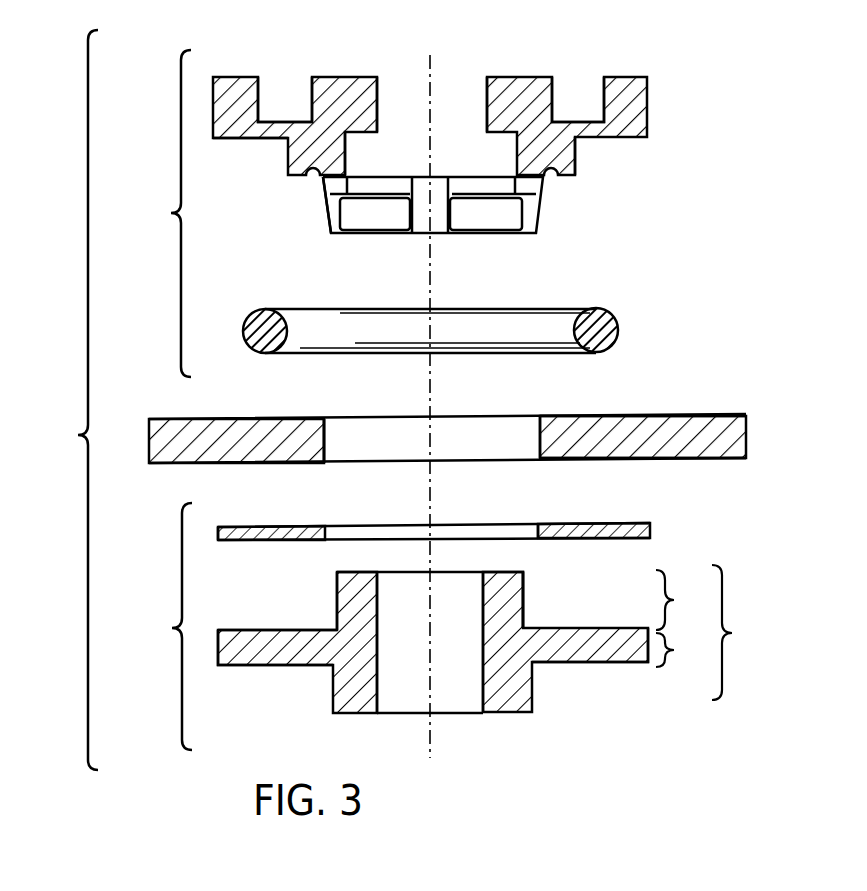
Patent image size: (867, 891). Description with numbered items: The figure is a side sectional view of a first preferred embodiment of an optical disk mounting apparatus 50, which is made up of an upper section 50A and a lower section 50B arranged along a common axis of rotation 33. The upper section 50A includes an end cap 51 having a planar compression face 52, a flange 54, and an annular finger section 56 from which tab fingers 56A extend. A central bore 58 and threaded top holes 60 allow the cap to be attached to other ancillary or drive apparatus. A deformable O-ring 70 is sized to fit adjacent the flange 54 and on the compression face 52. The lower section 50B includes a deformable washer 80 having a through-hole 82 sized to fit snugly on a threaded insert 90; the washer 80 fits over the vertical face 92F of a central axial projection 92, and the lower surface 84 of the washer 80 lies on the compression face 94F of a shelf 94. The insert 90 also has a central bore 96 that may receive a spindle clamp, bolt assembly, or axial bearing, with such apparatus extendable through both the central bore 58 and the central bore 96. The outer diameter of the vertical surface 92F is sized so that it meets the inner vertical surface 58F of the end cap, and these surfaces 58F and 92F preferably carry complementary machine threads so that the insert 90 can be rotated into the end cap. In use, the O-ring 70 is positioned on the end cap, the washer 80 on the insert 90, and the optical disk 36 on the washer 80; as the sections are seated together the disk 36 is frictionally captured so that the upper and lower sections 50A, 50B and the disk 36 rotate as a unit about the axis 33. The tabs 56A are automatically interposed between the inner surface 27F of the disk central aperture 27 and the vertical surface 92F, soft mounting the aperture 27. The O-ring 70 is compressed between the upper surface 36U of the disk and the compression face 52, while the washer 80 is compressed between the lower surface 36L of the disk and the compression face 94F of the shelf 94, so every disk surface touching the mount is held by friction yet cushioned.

The axis of rotation 33 is at (428, 735).
The optical disk mounting apparatus 50 is at (63, 400).
The upper section 50A is at (152, 213).
The lower section 50B is at (152, 626).
The end cap 51 is at (648, 100).
The planar compression face 52 is at (640, 138).
The flange 54 is at (577, 160).
The annular finger section 56 is at (543, 193).
The tab fingers 56A is at (322, 220).
The central bore 58 is at (450, 92).
The inner vertical surface 58F is at (350, 172).
The threaded top holes 60 is at (577, 85).
The deformable O-ring 70 is at (618, 322).
The optical disk 36 is at (747, 434).
The upper surface of the optical disk 36U is at (718, 412).
The lower surface of the optical disk 36L is at (728, 460).
The optical disk central aperture 27 is at (512, 450).
The inner surface of the central aperture 27F is at (337, 466).
The deformable washer 80 is at (652, 527).
The through-hole 82 is at (520, 531).
The lower surface of the washer 84 is at (282, 546).
The threaded insert 90 is at (497, 639).
The central axial projection 92 is at (524, 600).
The vertical face of the central axial projection 92F is at (525, 590).
The shelf 94 is at (465, 646).
The compression face of the shelf 94F is at (259, 630).
The central bore 96 is at (462, 690).